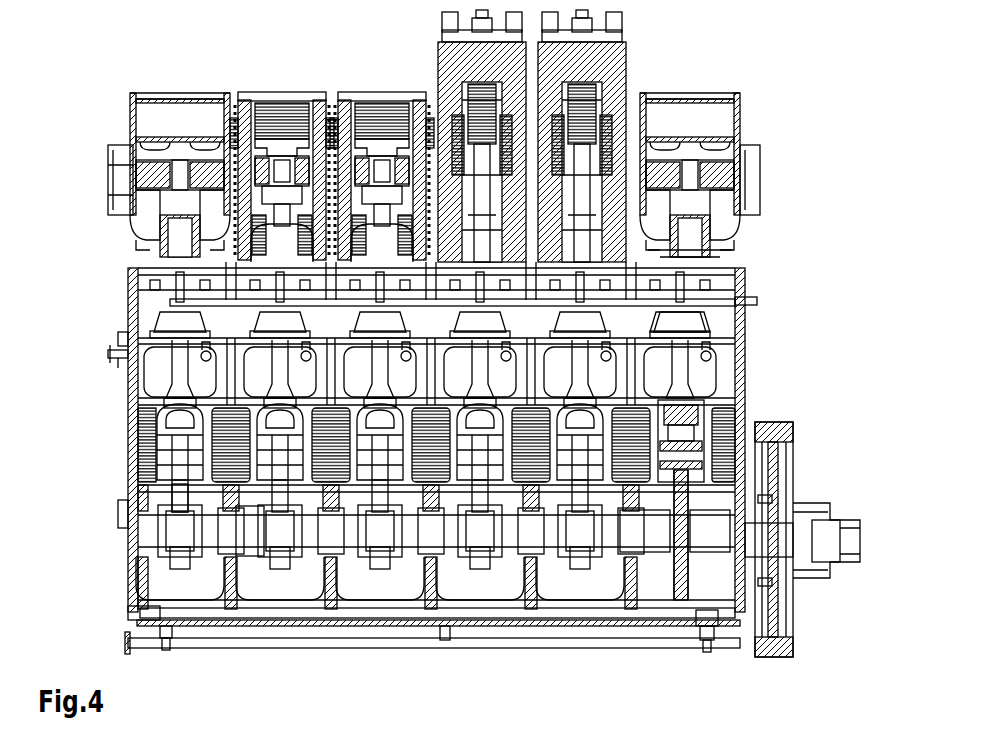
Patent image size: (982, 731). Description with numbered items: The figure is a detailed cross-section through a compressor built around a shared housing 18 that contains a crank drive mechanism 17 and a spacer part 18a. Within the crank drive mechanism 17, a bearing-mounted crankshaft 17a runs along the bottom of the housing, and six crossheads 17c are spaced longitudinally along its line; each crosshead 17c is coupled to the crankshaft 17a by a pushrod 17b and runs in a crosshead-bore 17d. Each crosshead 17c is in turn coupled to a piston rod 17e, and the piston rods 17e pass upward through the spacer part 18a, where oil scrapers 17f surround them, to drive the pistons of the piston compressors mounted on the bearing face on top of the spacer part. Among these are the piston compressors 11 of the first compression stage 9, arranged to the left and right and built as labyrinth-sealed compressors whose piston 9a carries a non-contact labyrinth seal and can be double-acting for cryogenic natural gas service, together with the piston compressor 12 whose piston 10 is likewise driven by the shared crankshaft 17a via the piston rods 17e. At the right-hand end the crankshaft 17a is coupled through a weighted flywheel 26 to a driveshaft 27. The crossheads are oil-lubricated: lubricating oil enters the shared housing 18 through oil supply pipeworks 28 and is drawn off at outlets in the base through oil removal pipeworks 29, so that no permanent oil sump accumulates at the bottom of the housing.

The first compression stage 9 is at (182, 160).
The piston 9a is at (712, 197).
The piston 10 is at (273, 143).
The piston compressor 11 is at (183, 68).
The piston compressor 12 is at (283, 60).
The crank drive mechanism 17 is at (96, 330).
The crankshaft 17a is at (237, 547).
The pushrod 17b is at (180, 493).
The crosshead 17c is at (730, 411).
The crosshead-bore 17d is at (700, 437).
The piston rod 17e is at (183, 355).
The oil scraper 17f is at (693, 322).
The shared housing 18 is at (78, 605).
The spacer part 18a is at (122, 270).
The weighted flywheel 26 is at (782, 652).
The driveshaft 27 is at (830, 553).
The oil supply pipeworks 28 is at (303, 615).
The oil removal pipeworks 29 is at (715, 578).